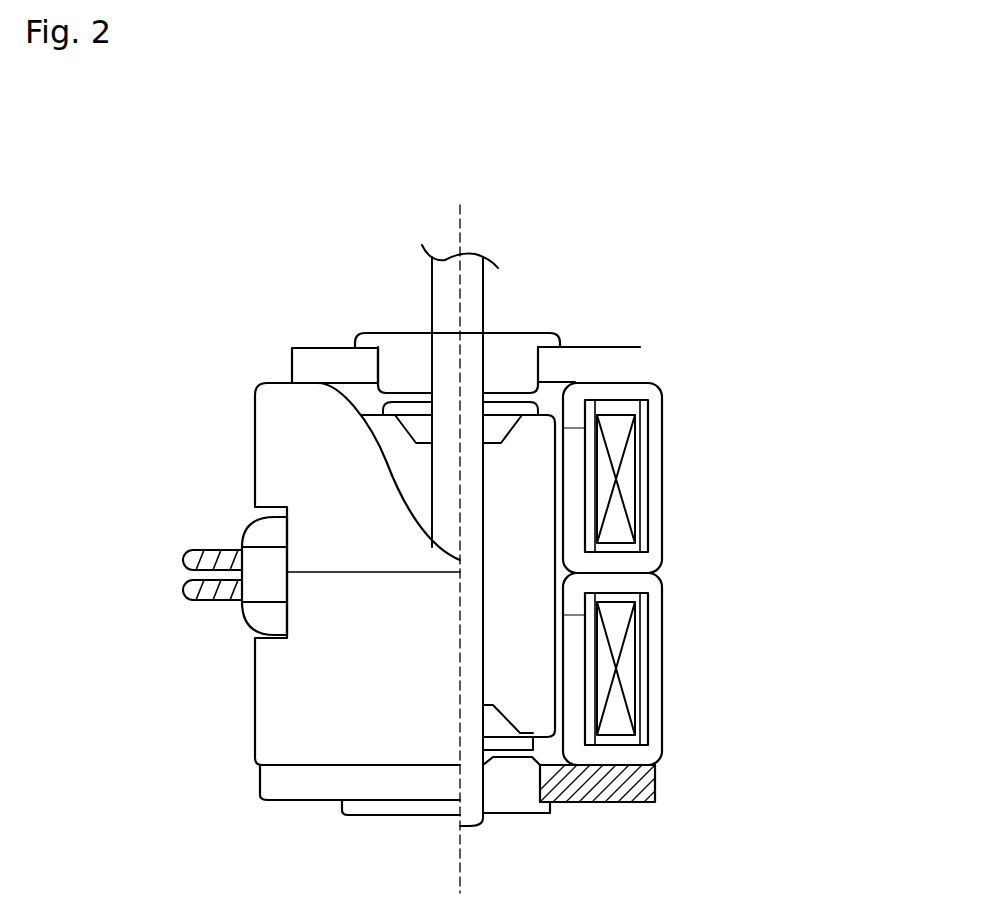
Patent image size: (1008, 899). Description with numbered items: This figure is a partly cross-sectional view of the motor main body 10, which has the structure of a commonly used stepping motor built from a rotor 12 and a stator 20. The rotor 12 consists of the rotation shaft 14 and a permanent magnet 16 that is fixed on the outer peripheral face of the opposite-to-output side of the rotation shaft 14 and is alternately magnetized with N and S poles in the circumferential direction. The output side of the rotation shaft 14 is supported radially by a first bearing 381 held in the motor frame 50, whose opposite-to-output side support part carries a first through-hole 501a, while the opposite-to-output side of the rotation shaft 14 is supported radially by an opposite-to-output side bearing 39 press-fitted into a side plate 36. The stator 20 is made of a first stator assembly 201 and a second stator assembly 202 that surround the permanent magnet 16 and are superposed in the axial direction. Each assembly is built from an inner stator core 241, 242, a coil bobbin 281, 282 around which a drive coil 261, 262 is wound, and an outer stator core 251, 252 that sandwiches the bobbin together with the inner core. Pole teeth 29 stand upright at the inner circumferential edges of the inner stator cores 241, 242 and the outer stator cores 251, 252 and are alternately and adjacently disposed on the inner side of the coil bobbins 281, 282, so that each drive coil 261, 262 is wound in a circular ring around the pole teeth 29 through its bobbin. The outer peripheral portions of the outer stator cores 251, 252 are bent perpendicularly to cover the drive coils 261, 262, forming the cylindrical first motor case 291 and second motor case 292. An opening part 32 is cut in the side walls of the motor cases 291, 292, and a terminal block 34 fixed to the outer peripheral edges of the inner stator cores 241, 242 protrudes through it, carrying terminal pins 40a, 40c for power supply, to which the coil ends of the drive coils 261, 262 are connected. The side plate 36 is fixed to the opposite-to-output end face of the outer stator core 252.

The motor main body 10 is at (207, 200).
The rotor 12 is at (340, 220).
The rotation shaft 14 is at (437, 327).
The permanent magnet 16 is at (385, 428).
The motor frame 50 is at (298, 365).
The first through-hole 501a is at (537, 372).
The first bearing 381 is at (517, 343).
The pole teeth 29 is at (570, 652).
The stator 20 is at (853, 497).
The first stator assembly 201 is at (740, 491).
The second stator assembly 202 is at (740, 672).
The inner stator core 241 is at (635, 563).
The inner stator core 242 is at (633, 582).
The outer stator core 251 is at (578, 412).
The outer stator core 252 is at (617, 742).
The drive coil 261 is at (618, 422).
The drive coil 262 is at (578, 735).
The coil bobbin 281 is at (617, 407).
The coil bobbin 282 is at (655, 776).
The first motor case 291 is at (653, 460).
The second motor case 292 is at (653, 688).
The opposite-to-output side bearing 39 is at (507, 803).
The side plate 36 is at (272, 782).
The opening part 32 is at (260, 516).
The terminal block 34 is at (268, 616).
The terminal pin 40a is at (185, 558).
The terminal pin 40c is at (185, 590).